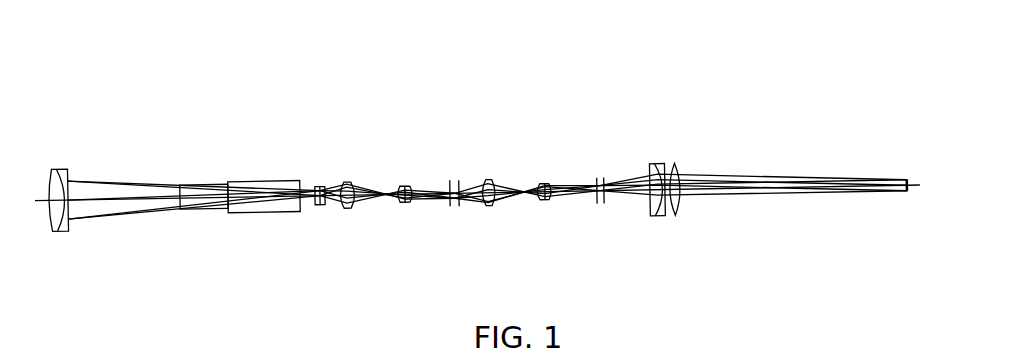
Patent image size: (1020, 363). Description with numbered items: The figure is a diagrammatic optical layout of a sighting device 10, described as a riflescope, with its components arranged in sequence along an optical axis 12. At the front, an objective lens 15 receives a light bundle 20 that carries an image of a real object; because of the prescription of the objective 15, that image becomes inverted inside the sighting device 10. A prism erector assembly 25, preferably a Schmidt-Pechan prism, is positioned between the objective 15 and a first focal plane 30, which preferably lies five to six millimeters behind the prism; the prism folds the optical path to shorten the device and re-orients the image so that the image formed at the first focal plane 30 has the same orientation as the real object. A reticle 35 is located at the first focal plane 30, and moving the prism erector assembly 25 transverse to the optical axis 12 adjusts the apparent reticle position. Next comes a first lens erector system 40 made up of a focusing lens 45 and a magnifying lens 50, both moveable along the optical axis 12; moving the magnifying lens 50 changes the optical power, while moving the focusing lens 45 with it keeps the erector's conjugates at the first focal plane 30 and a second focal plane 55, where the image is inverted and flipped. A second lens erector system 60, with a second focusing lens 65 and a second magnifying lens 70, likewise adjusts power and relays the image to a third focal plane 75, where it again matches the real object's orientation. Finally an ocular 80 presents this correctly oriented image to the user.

The sighting device 10 is at (151, 112).
The optical axis 12 is at (901, 171).
The objective lens 15 is at (63, 251).
The light bundle 20 is at (120, 183).
The prism erector assembly 25 is at (245, 231).
The first focal plane 30 is at (317, 163).
The reticle 35 is at (304, 172).
The first lens erector system 40 is at (387, 224).
The focusing lens 45 is at (346, 166).
The magnifying lens 50 is at (402, 168).
The second focal plane 55 is at (451, 163).
The second lens erector system 60 is at (519, 211).
The second focusing lens 65 is at (483, 163).
The second magnifying lens 70 is at (541, 166).
The third focal plane 75 is at (597, 164).
The ocular 80 is at (669, 232).